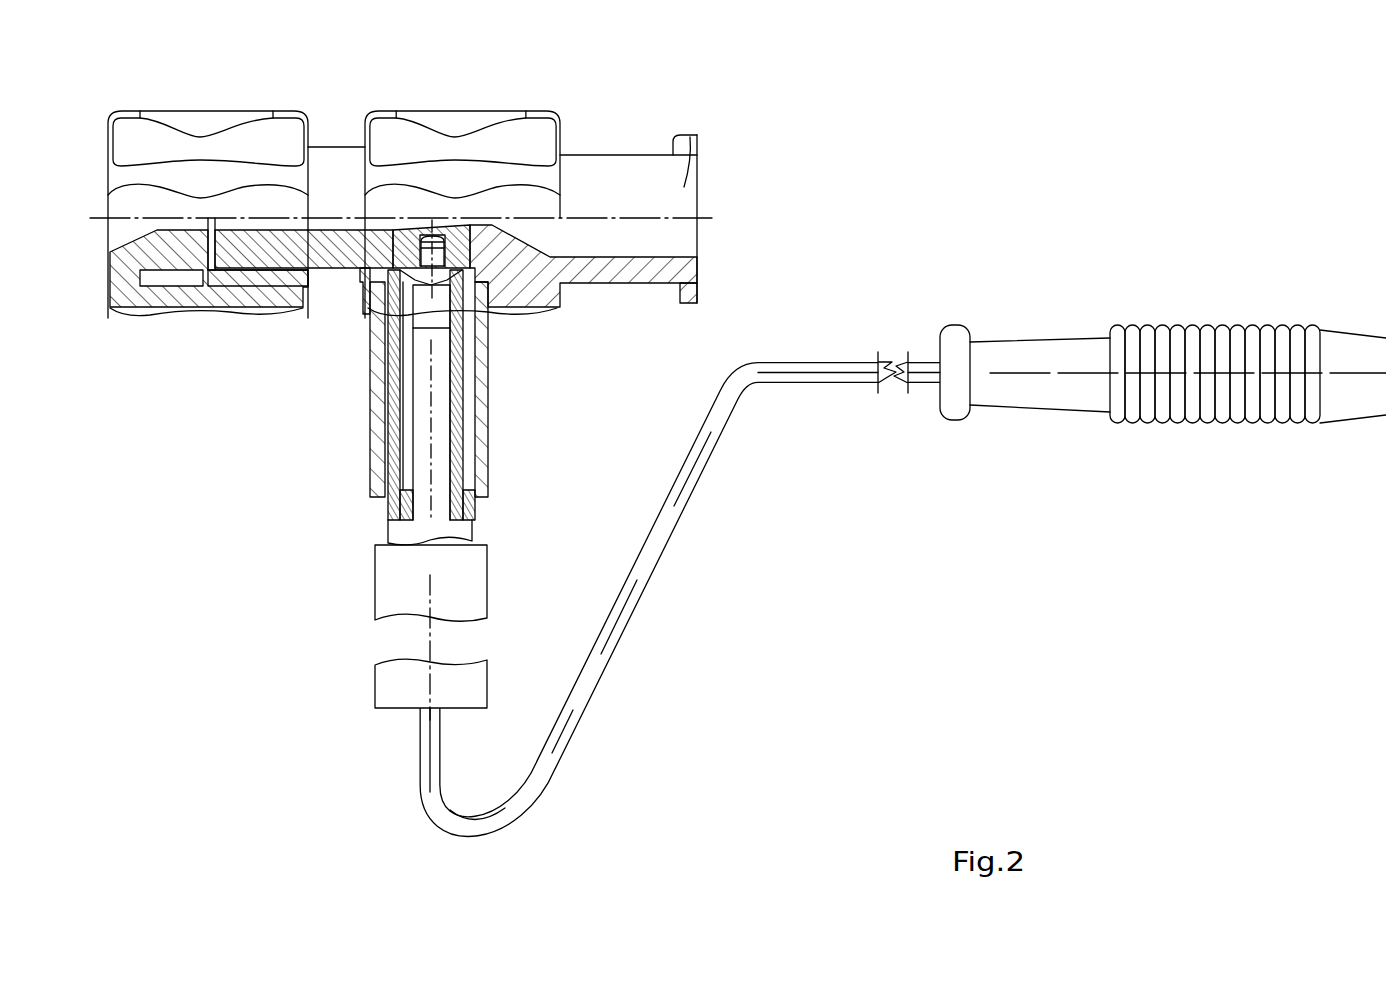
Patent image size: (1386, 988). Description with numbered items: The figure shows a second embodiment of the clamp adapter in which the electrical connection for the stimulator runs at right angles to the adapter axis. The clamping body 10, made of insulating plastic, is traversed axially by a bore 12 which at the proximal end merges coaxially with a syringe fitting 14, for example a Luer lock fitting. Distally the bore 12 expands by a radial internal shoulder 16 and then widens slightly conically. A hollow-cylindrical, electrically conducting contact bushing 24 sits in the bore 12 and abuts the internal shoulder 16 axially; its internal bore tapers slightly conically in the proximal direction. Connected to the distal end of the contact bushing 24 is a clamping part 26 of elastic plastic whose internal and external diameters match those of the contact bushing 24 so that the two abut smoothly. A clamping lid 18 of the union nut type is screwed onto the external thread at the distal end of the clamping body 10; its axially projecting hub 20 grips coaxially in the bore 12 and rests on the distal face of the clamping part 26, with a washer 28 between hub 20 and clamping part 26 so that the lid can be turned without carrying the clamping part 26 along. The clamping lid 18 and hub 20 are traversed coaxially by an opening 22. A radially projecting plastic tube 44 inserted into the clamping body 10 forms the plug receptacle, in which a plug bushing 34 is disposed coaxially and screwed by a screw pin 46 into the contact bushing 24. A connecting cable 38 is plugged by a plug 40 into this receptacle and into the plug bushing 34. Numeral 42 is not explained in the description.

The clamping body 10 is at (350, 270).
The bore 12 is at (310, 224).
The syringe fitting 14 is at (677, 188).
The internal shoulder 16 is at (510, 317).
The clamping lid 18 is at (143, 312).
The hub 20 is at (195, 243).
The opening 22 is at (165, 222).
The contact bushing 24 is at (468, 238).
The clamping part 26 is at (278, 238).
The washer 28 is at (207, 300).
The plug bushing 34 is at (392, 463).
The connecting cable 38 is at (722, 387).
The plug 40 is at (390, 508).
The tube wall 42 is at (490, 458).
The plastic tube 44 is at (374, 398).
The screw pin 46 is at (437, 236).